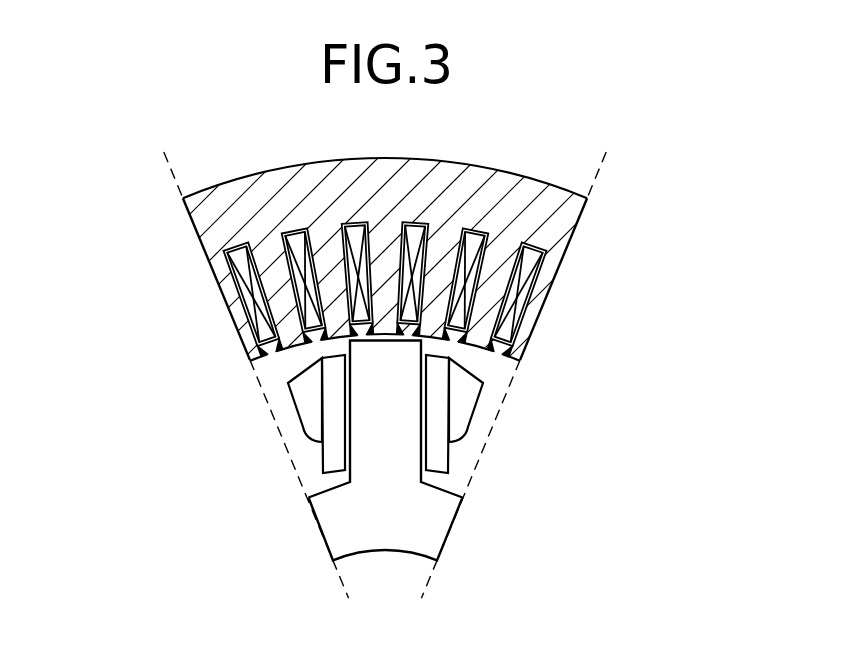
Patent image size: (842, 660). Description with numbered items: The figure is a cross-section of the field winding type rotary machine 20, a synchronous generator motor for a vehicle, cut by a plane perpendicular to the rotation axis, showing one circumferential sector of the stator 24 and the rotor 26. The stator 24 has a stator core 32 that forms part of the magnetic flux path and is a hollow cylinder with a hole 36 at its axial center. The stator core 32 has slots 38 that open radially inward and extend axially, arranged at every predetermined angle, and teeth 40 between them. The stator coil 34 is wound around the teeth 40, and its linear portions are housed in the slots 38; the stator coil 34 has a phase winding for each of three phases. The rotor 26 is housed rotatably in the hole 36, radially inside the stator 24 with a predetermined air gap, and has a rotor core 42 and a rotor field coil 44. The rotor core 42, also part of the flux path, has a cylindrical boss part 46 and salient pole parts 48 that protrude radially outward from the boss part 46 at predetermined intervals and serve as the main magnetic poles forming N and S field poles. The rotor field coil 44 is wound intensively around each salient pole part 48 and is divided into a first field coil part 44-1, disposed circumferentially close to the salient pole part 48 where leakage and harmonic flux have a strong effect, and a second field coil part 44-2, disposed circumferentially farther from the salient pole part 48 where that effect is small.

The field winding type rotary machine 20 is at (471, 156).
The stator 24 is at (601, 234).
The rotor 26 is at (311, 552).
The stator core 32 is at (234, 218).
The stator coil 34 is at (520, 277).
The hole 36 is at (490, 357).
The slots 38 is at (267, 320).
The teeth 40 is at (265, 253).
The rotor core 42 is at (617, 433).
The rotor field coil 44 is at (152, 420).
The first field coil part 44-1 is at (333, 452).
The second field coil part 44-2 is at (300, 395).
The boss part 46 is at (413, 525).
The salient pole parts 48 is at (390, 410).